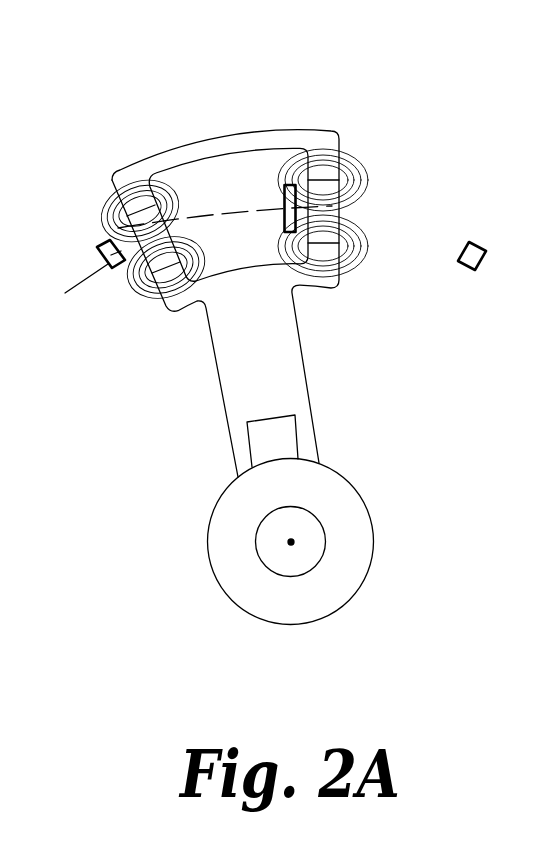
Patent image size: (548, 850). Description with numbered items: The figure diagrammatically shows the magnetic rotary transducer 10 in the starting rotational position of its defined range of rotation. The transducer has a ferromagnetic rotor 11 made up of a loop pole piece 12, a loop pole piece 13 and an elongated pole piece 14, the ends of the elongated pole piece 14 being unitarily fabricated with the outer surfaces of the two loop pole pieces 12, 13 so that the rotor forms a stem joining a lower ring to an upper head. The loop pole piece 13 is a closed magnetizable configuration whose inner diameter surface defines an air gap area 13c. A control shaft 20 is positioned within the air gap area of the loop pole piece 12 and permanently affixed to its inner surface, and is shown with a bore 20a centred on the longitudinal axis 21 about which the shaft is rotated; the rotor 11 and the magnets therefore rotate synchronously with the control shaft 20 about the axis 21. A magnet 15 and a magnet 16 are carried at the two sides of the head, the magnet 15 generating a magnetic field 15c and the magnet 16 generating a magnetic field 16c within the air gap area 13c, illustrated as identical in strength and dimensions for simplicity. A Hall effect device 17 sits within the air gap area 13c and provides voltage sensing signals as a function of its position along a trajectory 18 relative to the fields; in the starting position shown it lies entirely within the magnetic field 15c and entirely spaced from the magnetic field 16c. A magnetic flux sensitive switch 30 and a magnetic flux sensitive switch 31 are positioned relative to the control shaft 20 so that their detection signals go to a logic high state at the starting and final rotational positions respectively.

The magnetic rotary transducer 10 is at (127, 381).
The ferromagnetic rotor 11 is at (235, 246).
The loop pole piece 12 is at (305, 543).
The loop pole piece 13 is at (297, 118).
The air gap area 13c is at (203, 197).
The elongated pole piece 14 is at (210, 399).
The magnet 15 is at (363, 200).
The magnetic field 15c is at (353, 153).
The magnet 16 is at (115, 210).
The magnetic field 16c is at (110, 217).
The Hall effect device 17 is at (274, 187).
The trajectory 18 is at (222, 212).
The control shaft 20 is at (254, 571).
The hub bore 20a is at (272, 547).
The longitudinal axis 21 is at (292, 538).
The magnetic flux sensitive switch 30 is at (100, 260).
The magnetic flux sensitive switch 31 is at (482, 267).